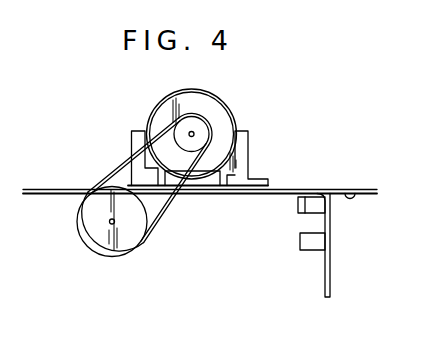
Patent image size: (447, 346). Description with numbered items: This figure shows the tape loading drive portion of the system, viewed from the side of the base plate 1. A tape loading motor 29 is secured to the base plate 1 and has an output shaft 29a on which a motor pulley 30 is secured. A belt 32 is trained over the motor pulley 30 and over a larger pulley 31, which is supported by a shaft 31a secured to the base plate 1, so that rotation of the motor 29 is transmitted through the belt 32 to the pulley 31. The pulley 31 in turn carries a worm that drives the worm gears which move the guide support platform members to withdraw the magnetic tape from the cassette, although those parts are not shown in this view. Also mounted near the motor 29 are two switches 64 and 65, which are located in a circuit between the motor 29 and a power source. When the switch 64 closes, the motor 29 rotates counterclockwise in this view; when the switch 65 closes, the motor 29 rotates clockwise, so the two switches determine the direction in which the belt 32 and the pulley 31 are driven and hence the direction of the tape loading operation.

The base plate 1 is at (326, 190).
The tape loading motor 29 is at (212, 105).
The output shaft 29a is at (195, 133).
The motor pulley 30 is at (180, 125).
The pulley 31 is at (92, 241).
The shaft 31a is at (132, 249).
The belt 32 is at (129, 165).
The switch 64 is at (300, 245).
The switch 65 is at (298, 210).